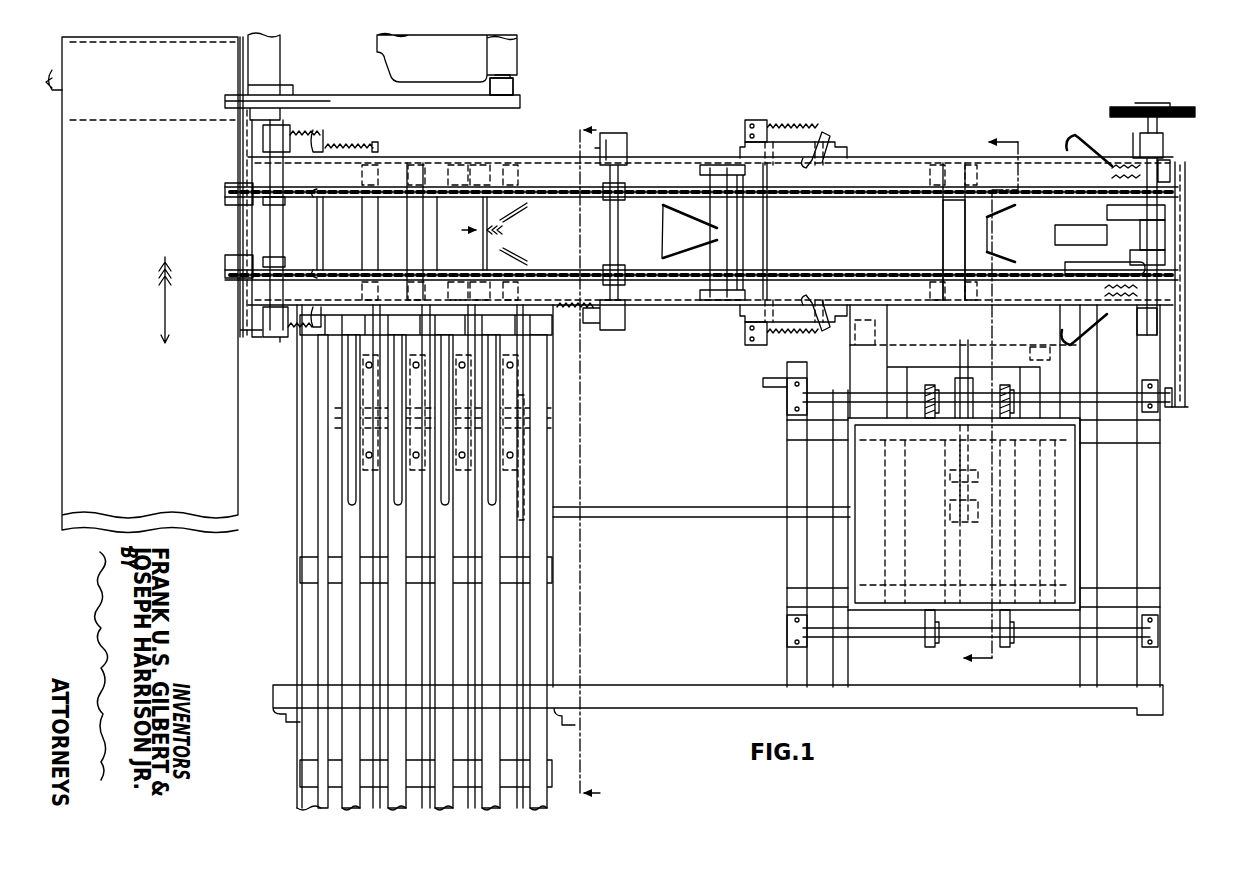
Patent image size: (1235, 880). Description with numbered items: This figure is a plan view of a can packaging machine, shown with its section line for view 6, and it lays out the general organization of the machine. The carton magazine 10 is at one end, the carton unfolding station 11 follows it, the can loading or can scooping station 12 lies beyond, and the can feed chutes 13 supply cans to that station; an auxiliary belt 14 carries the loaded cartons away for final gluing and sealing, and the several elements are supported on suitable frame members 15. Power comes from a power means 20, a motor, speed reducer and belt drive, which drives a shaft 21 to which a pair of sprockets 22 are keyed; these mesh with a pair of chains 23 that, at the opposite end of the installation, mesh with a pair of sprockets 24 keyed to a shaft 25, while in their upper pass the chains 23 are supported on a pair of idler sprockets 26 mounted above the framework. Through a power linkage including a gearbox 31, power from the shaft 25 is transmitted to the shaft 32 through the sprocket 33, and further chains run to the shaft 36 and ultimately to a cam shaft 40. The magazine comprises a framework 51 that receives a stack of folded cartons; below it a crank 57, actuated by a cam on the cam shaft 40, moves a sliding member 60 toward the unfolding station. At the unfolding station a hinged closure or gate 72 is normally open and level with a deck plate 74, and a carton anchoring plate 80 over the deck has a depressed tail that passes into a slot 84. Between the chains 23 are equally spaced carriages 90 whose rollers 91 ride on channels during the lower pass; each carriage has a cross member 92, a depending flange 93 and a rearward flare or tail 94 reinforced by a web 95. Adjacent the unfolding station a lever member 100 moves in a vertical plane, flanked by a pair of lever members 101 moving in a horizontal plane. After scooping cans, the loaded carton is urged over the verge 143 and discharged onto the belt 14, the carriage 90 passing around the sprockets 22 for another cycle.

The carton magazine 10 is at (1168, 547).
The carton unfolding station 11 is at (1063, 112).
The can loading or can scooping station 12 is at (537, 117).
The can feed chutes 13 is at (284, 614).
The auxiliary belt 14 is at (235, 465).
The frame members 15 is at (1168, 483).
The power means 20 is at (522, 76).
The shaft 21 is at (278, 243).
The sprockets 22 is at (278, 205).
The chains 23 is at (358, 195).
The sprockets 24 is at (1112, 207).
The shaft 25 is at (1160, 120).
The idler sprockets 26 is at (612, 206).
The gearbox 31 is at (1170, 161).
The shaft 32 is at (1093, 396).
The sprocket 33 is at (1168, 405).
The shaft 36 is at (1093, 634).
The cam shaft 40 is at (713, 515).
The framework 51 is at (1068, 610).
The crank 57 is at (975, 536).
The sliding member 60 is at (958, 367).
The hinged closure or gate 72 is at (1013, 362).
The deck plate 74 is at (1133, 220).
The carton anchoring plate 80 is at (1105, 293).
The slot 84 is at (1148, 282).
The carriages 90 is at (468, 237).
The rollers 91 is at (707, 296).
The cross member 92 is at (948, 212).
The depending flange 93 is at (718, 260).
The flare or tail 94 is at (527, 207).
The web 95 is at (494, 219).
The lever member 100 is at (1066, 237).
The lever members 101 is at (1088, 155).
The verge 143 is at (235, 260).
The section line 6- 6 is at (1003, 396).